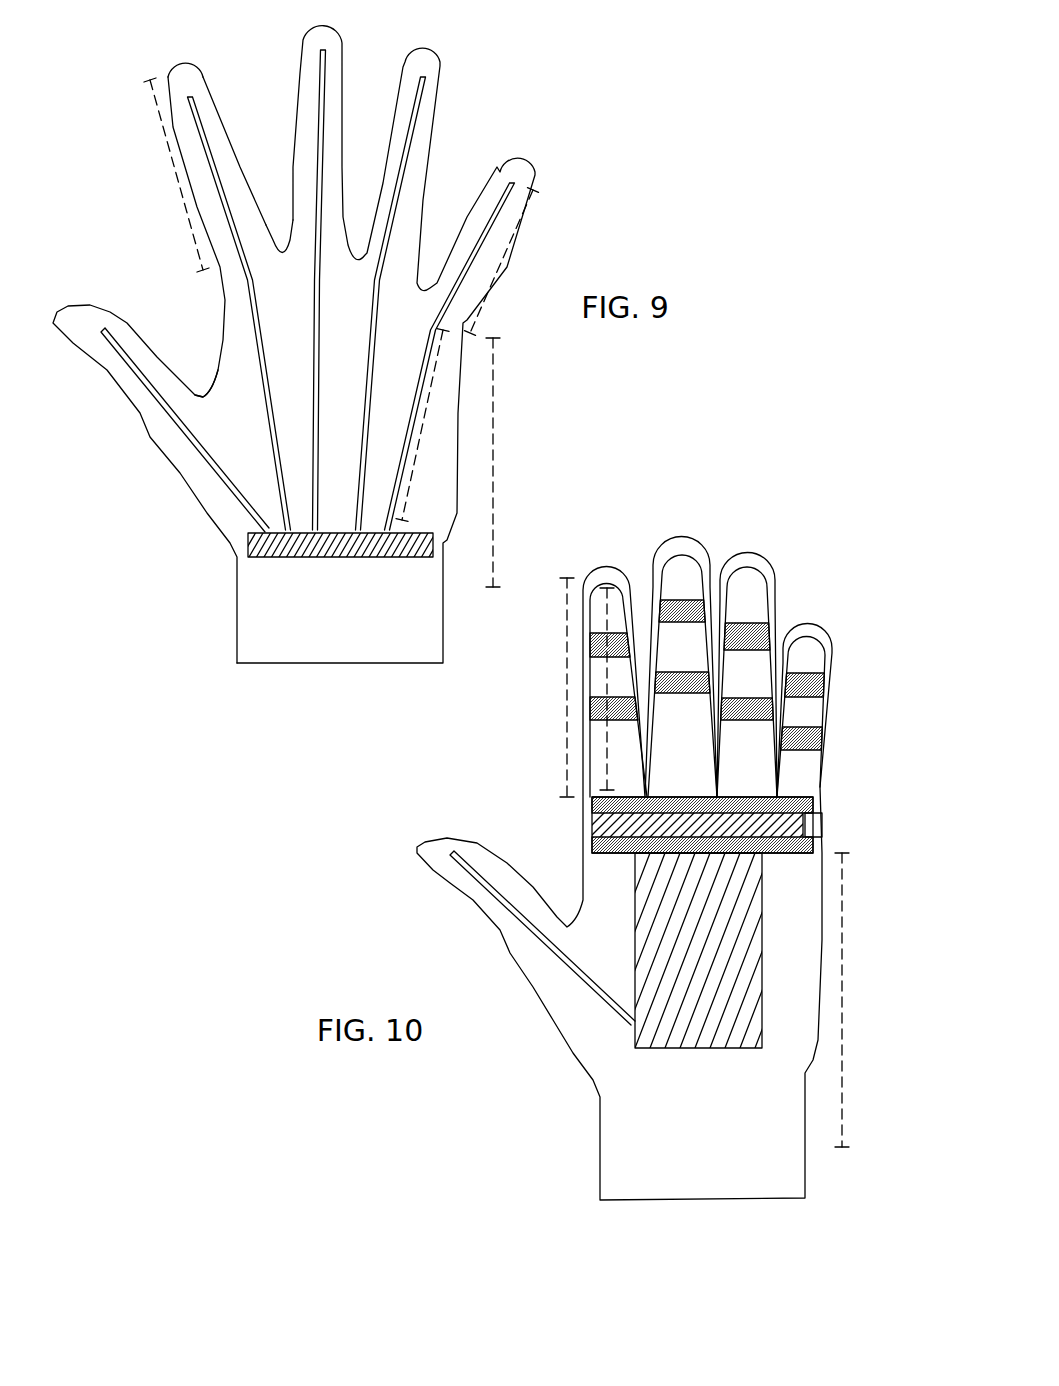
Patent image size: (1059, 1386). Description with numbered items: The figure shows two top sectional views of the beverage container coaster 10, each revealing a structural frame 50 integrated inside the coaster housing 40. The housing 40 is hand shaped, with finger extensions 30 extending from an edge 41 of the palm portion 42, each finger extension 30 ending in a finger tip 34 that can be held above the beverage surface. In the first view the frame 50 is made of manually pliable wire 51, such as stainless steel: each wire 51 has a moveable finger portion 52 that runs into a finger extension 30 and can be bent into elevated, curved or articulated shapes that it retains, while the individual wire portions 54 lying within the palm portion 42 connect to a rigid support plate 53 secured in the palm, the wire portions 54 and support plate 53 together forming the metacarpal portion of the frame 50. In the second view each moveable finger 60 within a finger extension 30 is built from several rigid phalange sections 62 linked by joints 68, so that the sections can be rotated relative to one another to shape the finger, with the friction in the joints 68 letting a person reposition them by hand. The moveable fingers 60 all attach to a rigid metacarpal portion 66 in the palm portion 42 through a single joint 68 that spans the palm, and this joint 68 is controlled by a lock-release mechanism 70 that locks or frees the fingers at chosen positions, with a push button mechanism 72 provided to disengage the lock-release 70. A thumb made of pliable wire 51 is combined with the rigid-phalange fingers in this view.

In FIG. 9, the beverage container coaster 10 is at (106, 145).
In FIG. 10, the beverage container coaster 10 is at (392, 937).
In FIG. 9, the finger extension 30 is at (183, 147).
In FIG. 10, the finger extension 30 is at (685, 676).
In FIG. 9, the finger tip 34 is at (186, 58).
In FIG. 9, the coaster housing 40 is at (220, 350).
In FIG. 10, the coaster housing 40 is at (600, 568).
In FIG. 9, the edge 41 is at (285, 252).
In FIG. 9, the palm portion 42 is at (462, 437).
In FIG. 10, the palm portion 42 is at (843, 1000).
In FIG. 9, the structural frame 50 is at (270, 440).
In FIG. 10, the structural frame 50 is at (775, 880).
In FIG. 9, the wire 51 is at (432, 330).
In FIG. 10, the wire 51 is at (558, 948).
In FIG. 9, the moveable finger portion 52 is at (490, 232).
In FIG. 9, the support plate 53 is at (352, 558).
In FIG. 9, the wire portions 54 is at (415, 418).
In FIG. 10, the moveable finger 60 is at (608, 689).
In FIG. 10, the phalange section 62 is at (760, 595).
In FIG. 10, the metacarpal portion 66 is at (705, 1050).
In FIG. 10, the joint 68 is at (825, 680).
In FIG. 10, the lock-release mechanism 70 is at (813, 800).
In FIG. 10, the push button mechanism 72 is at (822, 820).